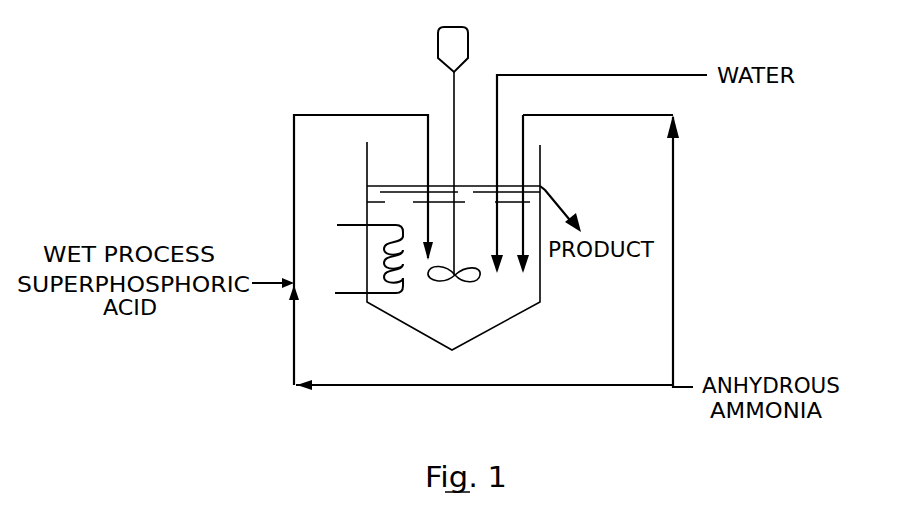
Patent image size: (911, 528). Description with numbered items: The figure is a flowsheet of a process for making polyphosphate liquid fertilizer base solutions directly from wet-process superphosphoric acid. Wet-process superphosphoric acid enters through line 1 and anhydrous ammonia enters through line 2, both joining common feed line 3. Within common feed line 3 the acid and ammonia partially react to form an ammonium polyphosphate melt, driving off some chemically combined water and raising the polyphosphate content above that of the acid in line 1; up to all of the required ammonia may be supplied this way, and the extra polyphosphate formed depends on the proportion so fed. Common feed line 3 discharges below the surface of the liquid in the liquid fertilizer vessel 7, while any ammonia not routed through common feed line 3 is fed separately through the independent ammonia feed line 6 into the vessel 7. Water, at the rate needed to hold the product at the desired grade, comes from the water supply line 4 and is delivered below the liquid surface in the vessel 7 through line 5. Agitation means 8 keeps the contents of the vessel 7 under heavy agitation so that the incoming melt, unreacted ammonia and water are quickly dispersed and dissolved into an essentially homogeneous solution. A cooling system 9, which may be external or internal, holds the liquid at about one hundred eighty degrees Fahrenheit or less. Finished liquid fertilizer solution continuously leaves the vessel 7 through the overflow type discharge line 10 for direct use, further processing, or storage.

The line 1 is at (264, 289).
The line 2 is at (682, 389).
The common feed line 3 is at (295, 156).
The water supply line 4 is at (612, 75).
The line 5 is at (497, 170).
The independent ammonia feed line 6 is at (523, 138).
The liquid fertilizer vessel 7 is at (367, 200).
The agitation means 8 is at (454, 90).
The cooling system 9 is at (369, 274).
The overflow type discharge line 10 is at (558, 197).